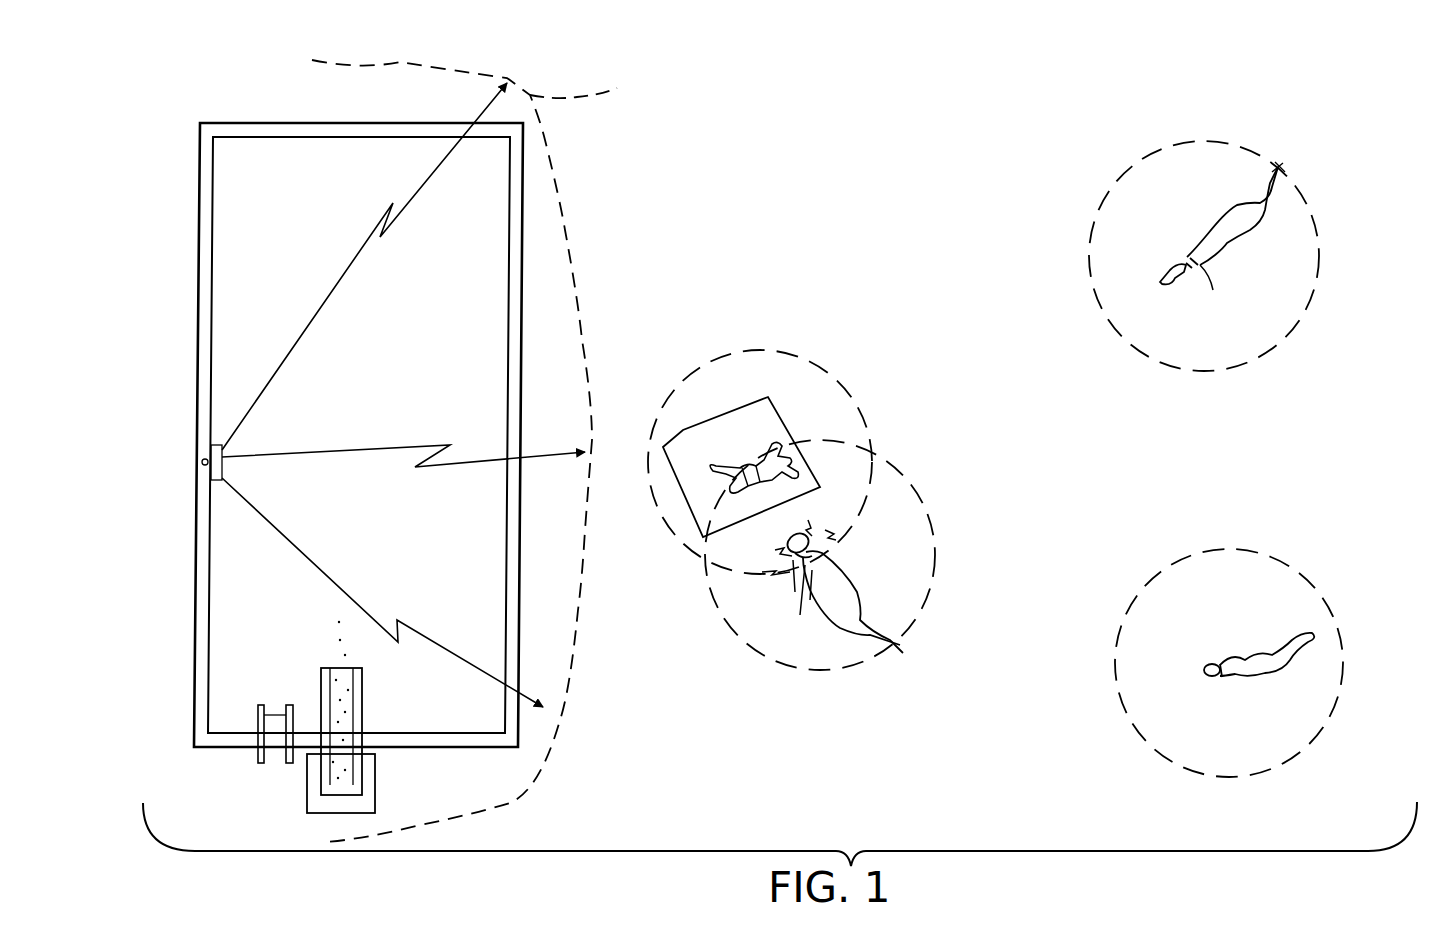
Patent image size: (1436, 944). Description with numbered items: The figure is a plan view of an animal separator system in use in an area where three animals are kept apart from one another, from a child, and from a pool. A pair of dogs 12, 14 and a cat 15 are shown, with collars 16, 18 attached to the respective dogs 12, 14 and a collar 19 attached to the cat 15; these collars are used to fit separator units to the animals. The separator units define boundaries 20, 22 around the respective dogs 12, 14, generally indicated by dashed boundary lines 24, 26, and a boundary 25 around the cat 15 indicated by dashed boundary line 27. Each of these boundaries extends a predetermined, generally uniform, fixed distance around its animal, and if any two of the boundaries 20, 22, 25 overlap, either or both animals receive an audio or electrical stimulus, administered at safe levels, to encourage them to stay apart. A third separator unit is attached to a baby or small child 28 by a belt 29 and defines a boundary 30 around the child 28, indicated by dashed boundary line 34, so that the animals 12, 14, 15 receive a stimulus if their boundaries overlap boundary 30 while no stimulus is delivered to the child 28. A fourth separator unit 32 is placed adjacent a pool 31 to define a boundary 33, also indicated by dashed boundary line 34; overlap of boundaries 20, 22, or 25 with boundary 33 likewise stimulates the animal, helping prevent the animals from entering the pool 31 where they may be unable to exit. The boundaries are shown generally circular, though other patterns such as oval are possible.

The dog 12 is at (1232, 228).
The dog 14 is at (840, 602).
The cat 15 is at (1243, 667).
The collar 16 is at (1203, 264).
The collar 18 is at (797, 576).
The collar 19 is at (1225, 675).
The boundary 20 is at (1183, 331).
The boundary 22 is at (905, 490).
The dashed boundary line 24 is at (1100, 312).
The boundary 25 is at (1198, 590).
The dashed boundary line 26 is at (701, 580).
The dashed boundary line 27 is at (1343, 640).
The baby or small child 28 is at (790, 440).
The belt 29 is at (700, 490).
The boundary 30 is at (703, 397).
The pool 31 is at (236, 187).
The fourth separator unit 32 is at (207, 458).
The boundary 33 is at (348, 122).
The dashed boundary line 34 is at (763, 350).